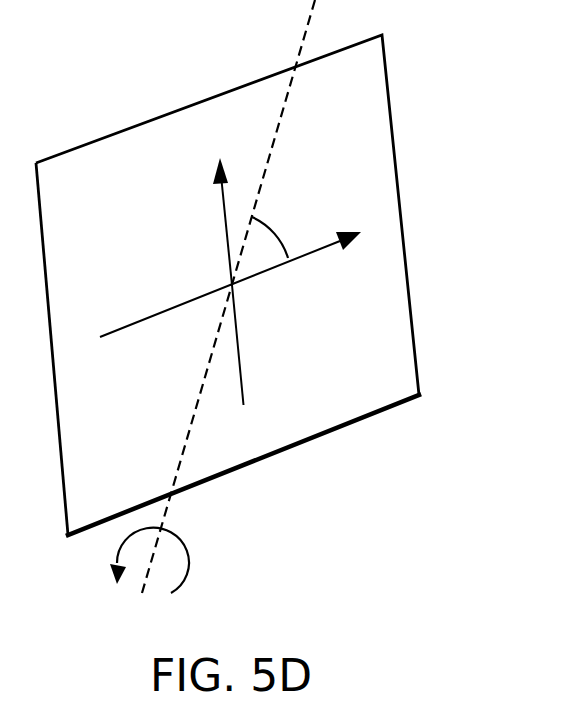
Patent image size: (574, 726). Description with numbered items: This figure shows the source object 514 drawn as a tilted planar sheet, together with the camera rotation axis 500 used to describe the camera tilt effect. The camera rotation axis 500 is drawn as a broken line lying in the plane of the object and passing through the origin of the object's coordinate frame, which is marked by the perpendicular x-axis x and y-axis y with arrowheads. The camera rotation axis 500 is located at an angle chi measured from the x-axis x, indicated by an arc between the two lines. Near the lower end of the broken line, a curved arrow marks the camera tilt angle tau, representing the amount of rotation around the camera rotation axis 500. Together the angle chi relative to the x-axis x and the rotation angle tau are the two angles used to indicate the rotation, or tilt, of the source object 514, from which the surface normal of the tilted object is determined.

The source object 514 is at (417, 348).
The camera rotation axis 500 is at (162, 514).
The x-axis x is at (231, 284).
The y-axis y is at (219, 281).
The angle χ chi is at (278, 232).
The camera tilt angle τ tau is at (160, 560).